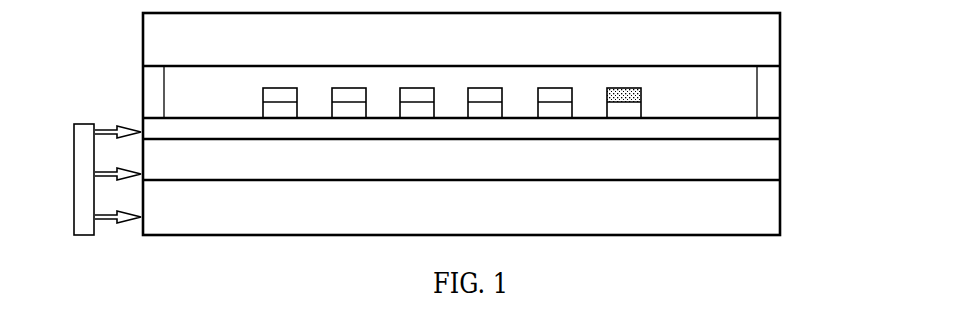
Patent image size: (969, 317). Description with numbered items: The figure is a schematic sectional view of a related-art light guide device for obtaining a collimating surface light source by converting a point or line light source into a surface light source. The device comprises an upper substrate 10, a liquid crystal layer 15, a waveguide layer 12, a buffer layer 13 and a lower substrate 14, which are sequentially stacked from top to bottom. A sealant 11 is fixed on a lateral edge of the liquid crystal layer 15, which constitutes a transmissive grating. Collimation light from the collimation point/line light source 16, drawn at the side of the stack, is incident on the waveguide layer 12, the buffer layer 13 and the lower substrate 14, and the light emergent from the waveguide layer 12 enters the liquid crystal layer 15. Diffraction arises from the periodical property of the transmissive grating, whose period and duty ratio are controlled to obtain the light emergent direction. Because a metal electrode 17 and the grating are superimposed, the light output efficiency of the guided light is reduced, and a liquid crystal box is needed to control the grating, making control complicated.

The upper substrate 10 is at (782, 42).
The sealant 11 is at (773, 92).
The waveguide layer 12 is at (771, 133).
The buffer layer 13 is at (771, 168).
The lower substrate 14 is at (771, 215).
The liquid crystal layer 15 is at (700, 80).
The collimation point/line light source 16 is at (77, 168).
The metal electrode 17 is at (480, 83).